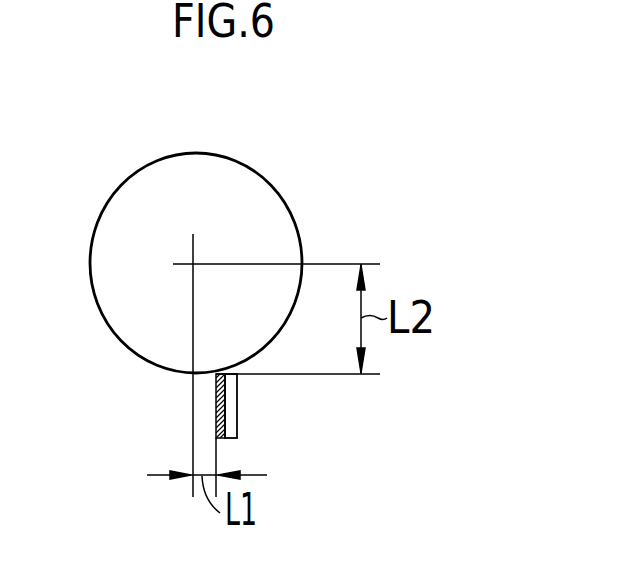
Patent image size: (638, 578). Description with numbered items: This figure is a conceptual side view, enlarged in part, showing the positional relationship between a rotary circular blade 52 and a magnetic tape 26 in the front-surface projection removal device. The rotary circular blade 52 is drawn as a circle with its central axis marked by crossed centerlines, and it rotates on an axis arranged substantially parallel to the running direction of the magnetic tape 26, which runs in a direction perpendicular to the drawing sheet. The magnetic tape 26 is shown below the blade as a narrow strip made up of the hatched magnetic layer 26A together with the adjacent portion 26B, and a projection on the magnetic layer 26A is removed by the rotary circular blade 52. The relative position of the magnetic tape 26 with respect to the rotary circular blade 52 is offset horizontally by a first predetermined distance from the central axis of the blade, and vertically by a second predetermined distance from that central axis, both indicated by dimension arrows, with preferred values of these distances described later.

The rotary circular blade 52 is at (273, 184).
The magnetic tape 26 is at (221, 432).
The magnetic layer 26A is at (217, 413).
The support member 26B is at (237, 412).